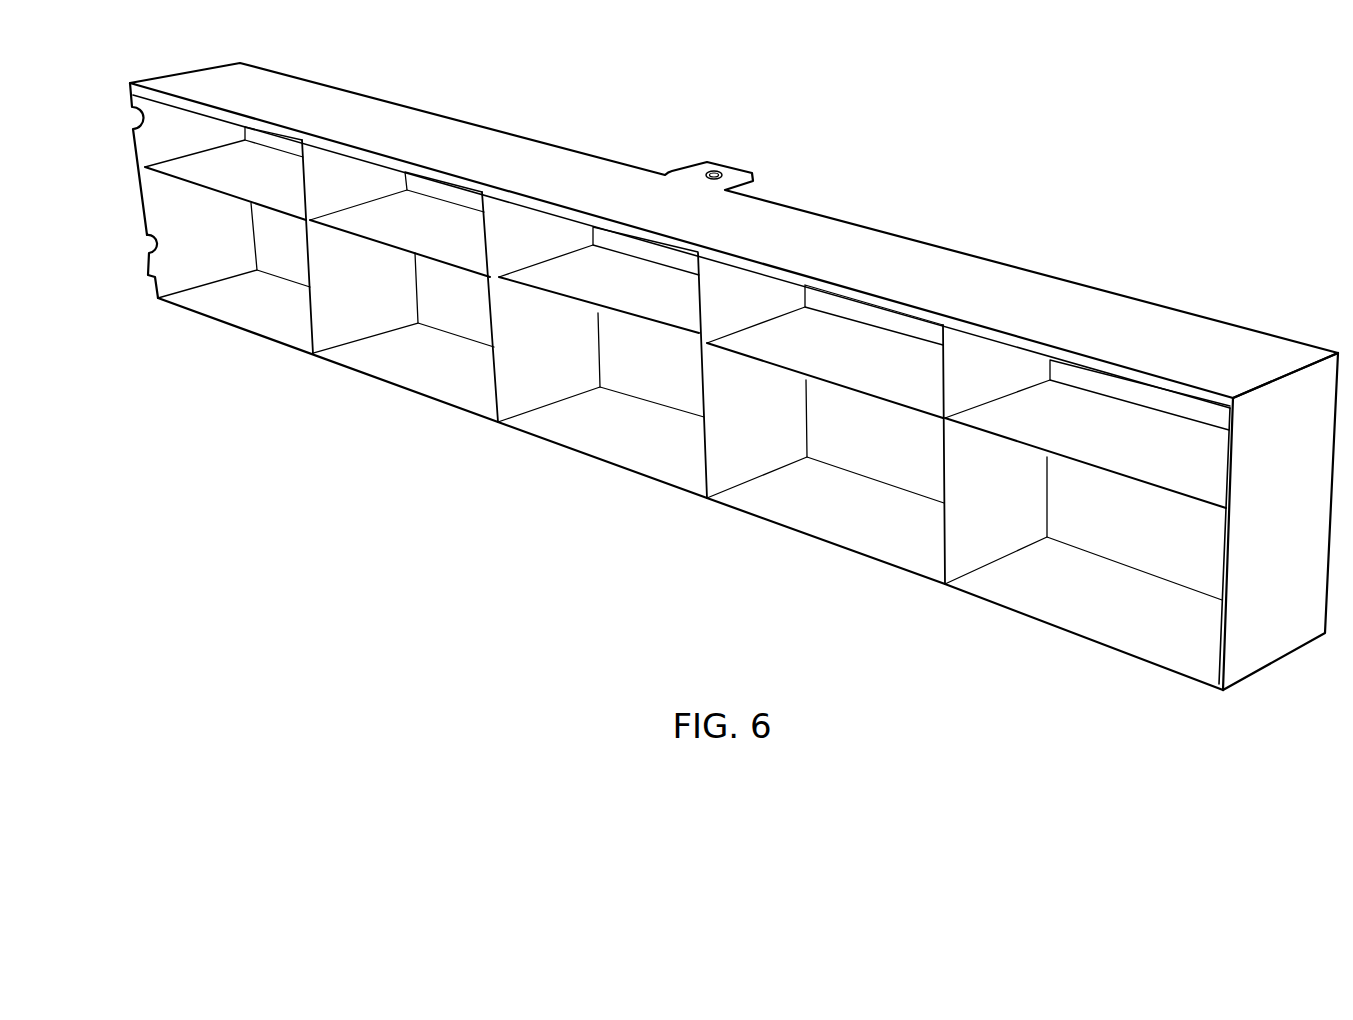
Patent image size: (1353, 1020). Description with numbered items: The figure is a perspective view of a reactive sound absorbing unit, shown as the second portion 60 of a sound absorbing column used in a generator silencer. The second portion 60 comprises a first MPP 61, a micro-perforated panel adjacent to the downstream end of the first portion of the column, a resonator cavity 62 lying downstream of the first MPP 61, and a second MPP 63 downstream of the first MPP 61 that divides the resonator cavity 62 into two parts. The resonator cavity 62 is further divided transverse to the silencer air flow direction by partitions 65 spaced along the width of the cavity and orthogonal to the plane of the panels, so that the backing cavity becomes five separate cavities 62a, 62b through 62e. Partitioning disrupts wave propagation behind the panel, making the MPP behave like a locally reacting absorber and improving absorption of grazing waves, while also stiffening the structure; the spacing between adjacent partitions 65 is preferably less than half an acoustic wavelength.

The second portion 60 is at (141, 60).
The first MPP 61 is at (227, 326).
The resonator cavity 62 is at (653, 377).
The first separate cavity 62a is at (257, 285).
The second separate cavity 62b is at (432, 307).
The fifth separate cavity 62e is at (1090, 592).
The second MPP 63 is at (226, 176).
The partitions 65 is at (943, 538).